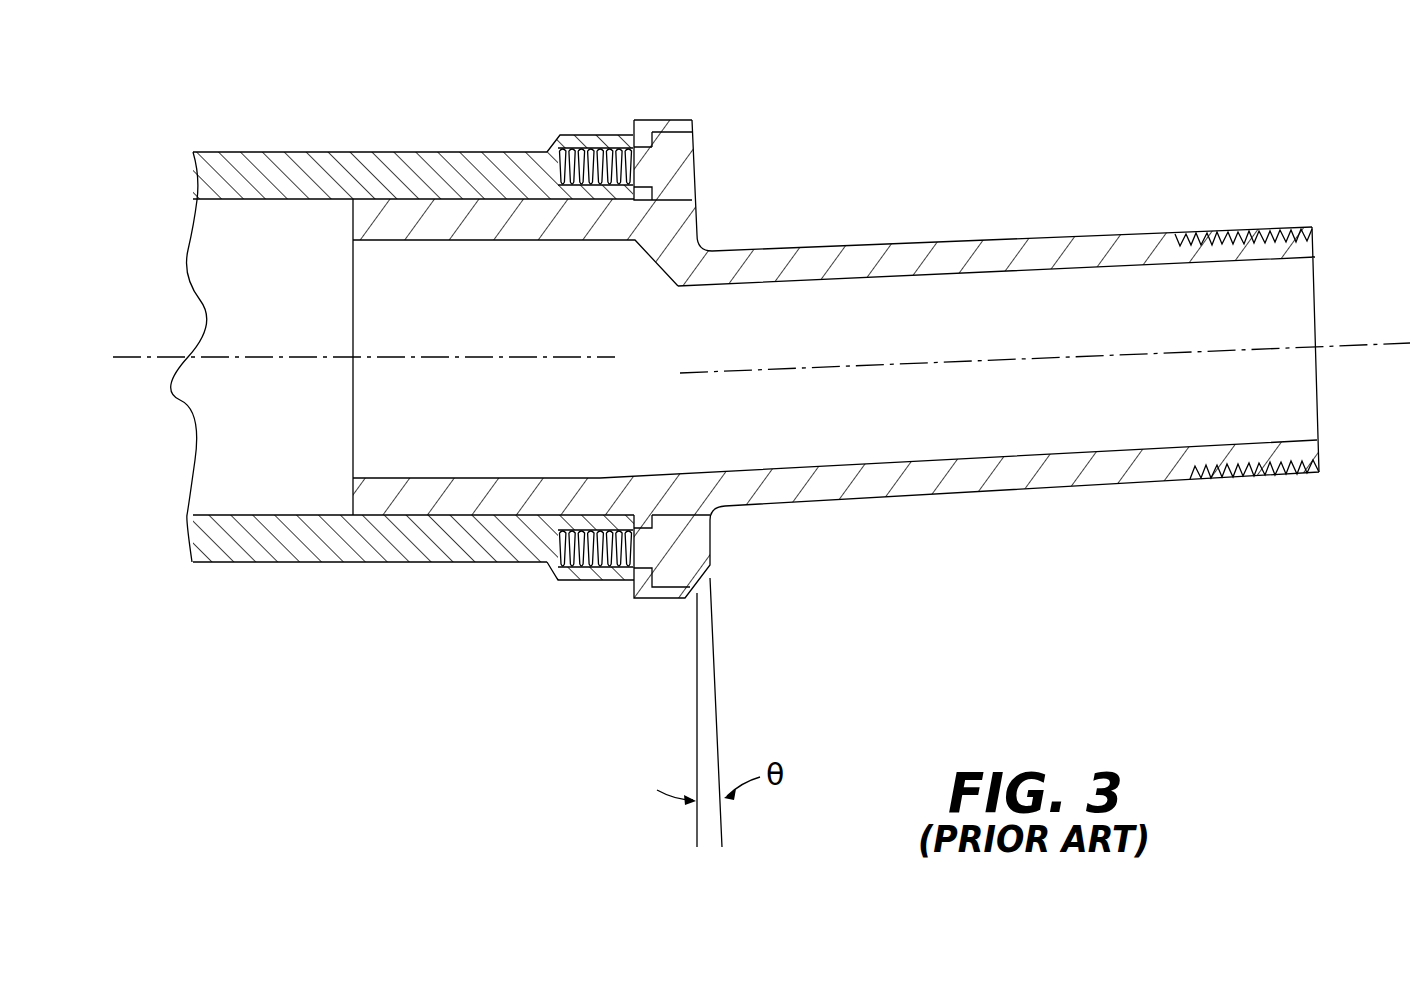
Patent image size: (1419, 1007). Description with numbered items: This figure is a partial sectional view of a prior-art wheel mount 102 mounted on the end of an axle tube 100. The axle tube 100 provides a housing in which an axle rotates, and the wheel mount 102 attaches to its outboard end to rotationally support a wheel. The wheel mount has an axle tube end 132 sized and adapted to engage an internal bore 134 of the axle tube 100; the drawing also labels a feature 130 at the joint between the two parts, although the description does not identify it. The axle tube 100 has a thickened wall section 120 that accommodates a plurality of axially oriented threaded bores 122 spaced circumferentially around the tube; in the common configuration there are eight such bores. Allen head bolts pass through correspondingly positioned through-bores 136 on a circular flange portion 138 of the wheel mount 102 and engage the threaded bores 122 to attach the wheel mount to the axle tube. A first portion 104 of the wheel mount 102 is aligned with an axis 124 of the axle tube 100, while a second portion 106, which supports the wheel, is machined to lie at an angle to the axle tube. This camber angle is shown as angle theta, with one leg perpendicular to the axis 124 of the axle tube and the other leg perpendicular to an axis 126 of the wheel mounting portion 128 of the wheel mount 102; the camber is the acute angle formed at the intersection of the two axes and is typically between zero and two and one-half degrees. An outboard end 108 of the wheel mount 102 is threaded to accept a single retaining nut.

The axle tube 100 is at (380, 168).
The wheel mount 102 is at (915, 225).
The first portion 104 is at (483, 207).
The second portion 106 is at (1075, 247).
The outboard end 108 is at (1245, 225).
The thickened wall section 120 is at (558, 150).
The threaded bores 122 is at (613, 153).
The axis of the axle tube 124 is at (238, 355).
The axis of the wheel mounting portion 126 is at (1153, 352).
The wheel mounting portion 128 is at (985, 240).
The flange 130 is at (637, 167).
The axle tube end 132 is at (415, 208).
The internal bore 134 is at (305, 200).
The through-bores 136 is at (653, 184).
The circular flange portion 138 is at (692, 120).